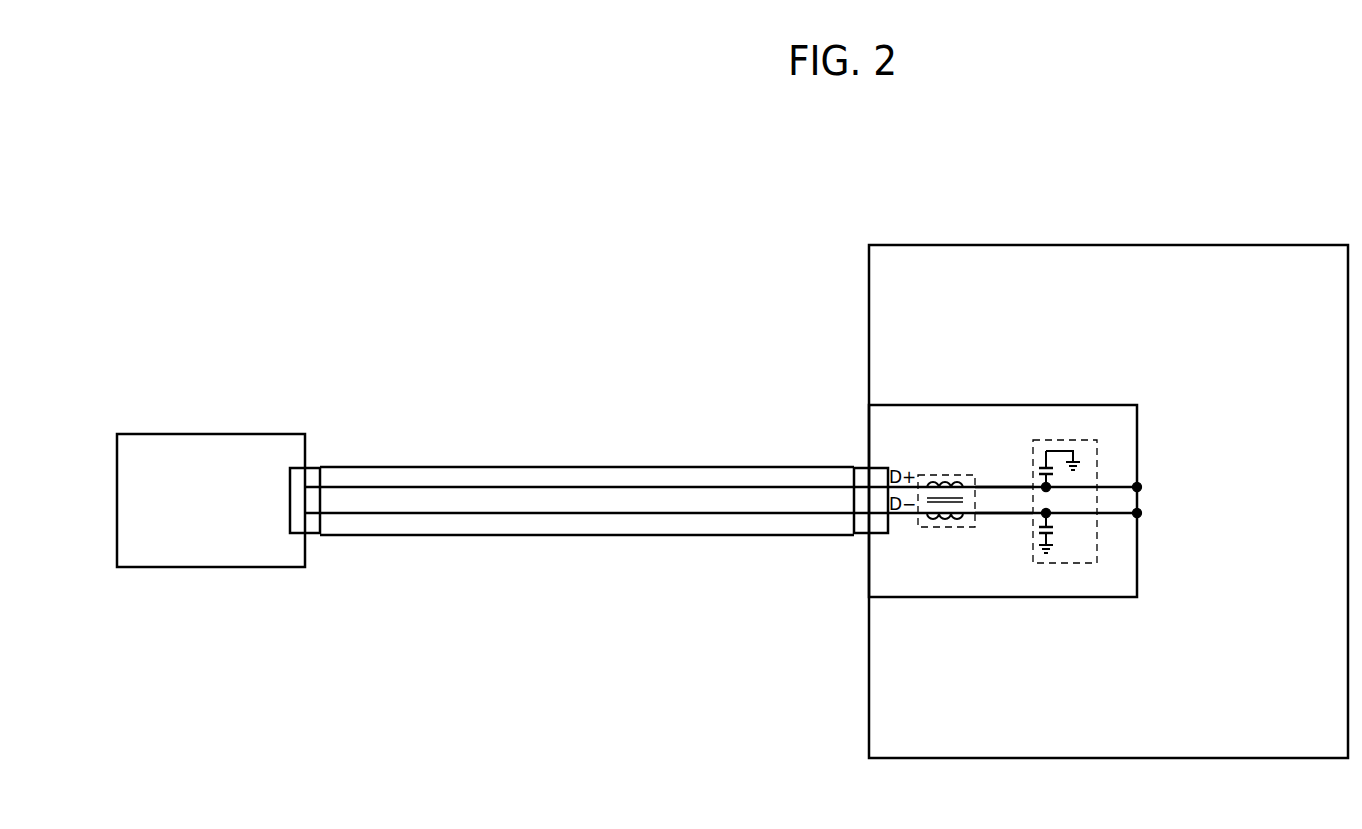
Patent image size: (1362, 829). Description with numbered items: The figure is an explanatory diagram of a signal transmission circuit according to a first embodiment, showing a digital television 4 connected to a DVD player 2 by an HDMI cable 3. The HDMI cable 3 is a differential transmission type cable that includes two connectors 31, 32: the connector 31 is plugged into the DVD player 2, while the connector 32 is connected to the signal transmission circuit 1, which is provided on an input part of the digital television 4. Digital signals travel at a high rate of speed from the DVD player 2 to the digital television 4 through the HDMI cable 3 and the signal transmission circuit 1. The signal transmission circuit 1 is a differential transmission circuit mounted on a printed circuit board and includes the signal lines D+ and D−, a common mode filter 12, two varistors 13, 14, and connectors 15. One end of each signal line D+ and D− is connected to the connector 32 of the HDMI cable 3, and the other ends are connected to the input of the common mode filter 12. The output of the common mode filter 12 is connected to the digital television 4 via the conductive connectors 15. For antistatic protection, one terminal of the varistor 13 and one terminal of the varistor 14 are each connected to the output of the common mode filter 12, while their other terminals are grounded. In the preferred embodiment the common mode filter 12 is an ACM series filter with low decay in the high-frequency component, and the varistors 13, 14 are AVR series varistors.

The signal transmission circuit 1 is at (1137, 437).
The DVD player 2 is at (195, 434).
The HDMI cable 3 is at (582, 467).
The digital television 4 is at (1238, 245).
The common mode filter 12 is at (943, 474).
The varistor 13 is at (1052, 452).
The varistor 14 is at (1055, 542).
The connectors 15 is at (992, 490).
The connector 31 is at (312, 540).
The connector 32 is at (862, 468).